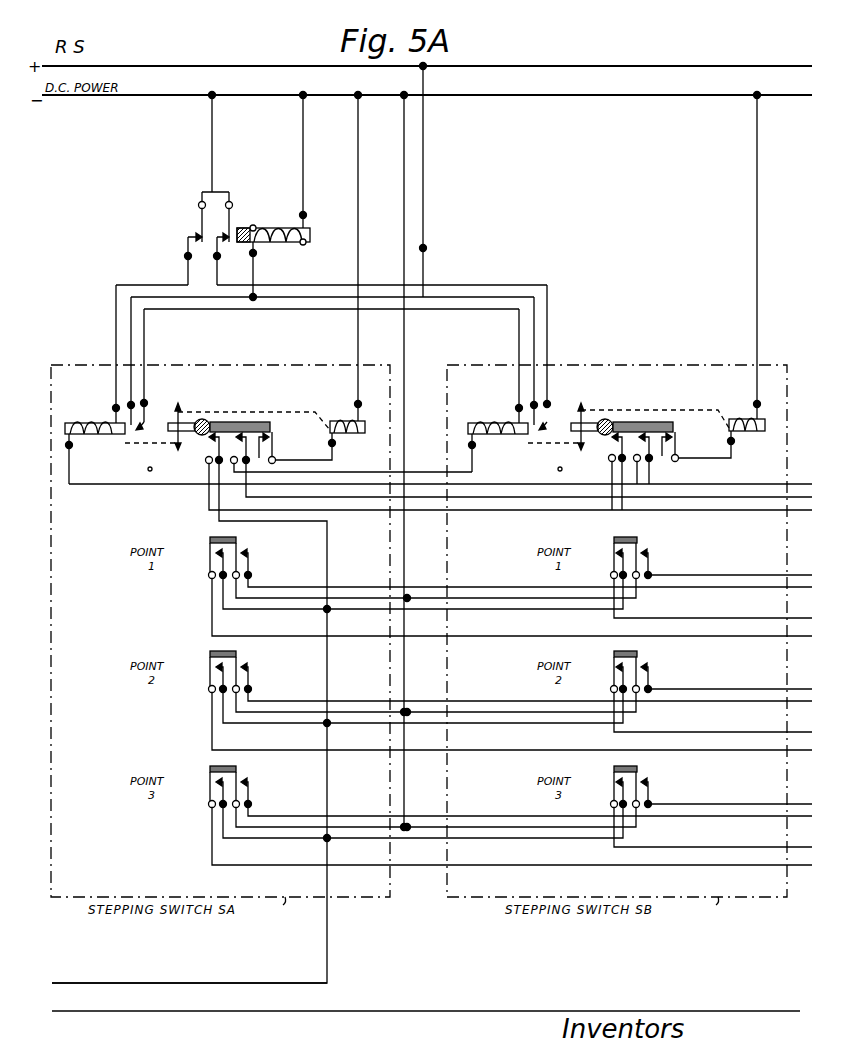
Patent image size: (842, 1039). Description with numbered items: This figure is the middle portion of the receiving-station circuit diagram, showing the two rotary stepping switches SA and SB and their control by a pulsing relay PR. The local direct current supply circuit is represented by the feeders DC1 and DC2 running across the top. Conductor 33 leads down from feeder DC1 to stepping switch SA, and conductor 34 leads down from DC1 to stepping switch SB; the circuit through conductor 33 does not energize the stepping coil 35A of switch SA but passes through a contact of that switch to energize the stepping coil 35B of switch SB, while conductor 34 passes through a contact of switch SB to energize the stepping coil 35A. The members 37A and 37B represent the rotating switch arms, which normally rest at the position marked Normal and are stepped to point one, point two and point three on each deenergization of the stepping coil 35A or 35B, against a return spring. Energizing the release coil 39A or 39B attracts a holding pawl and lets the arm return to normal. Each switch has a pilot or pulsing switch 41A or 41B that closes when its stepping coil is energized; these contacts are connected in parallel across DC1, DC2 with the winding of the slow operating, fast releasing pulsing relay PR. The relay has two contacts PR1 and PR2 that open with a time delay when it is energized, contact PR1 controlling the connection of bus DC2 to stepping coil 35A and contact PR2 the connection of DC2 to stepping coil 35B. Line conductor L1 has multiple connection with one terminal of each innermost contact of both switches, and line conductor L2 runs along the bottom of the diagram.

The direct current supply feeder DC1 is at (227, 66).
The direct current supply feeder DC2 is at (190, 96).
The pulsing relay PR is at (283, 198).
The pulsing relay contact PR1 is at (200, 235).
The pulsing relay contact PR2 is at (230, 221).
The stepping coil 35A is at (109, 422).
The switch arm 37A is at (172, 425).
The release coil 39A is at (339, 420).
The pilot or pulsing switch 41A is at (147, 401).
The stepping coil 35B is at (504, 422).
The switch arm 37B is at (575, 423).
The release coil 39B is at (743, 418).
The pilot or pulsing switch 41B is at (550, 393).
The conductor 33 is at (524, 497).
The conductor 34 is at (706, 484).
The line conductor L1 is at (140, 983).
The line conductor L2 is at (128, 1011).